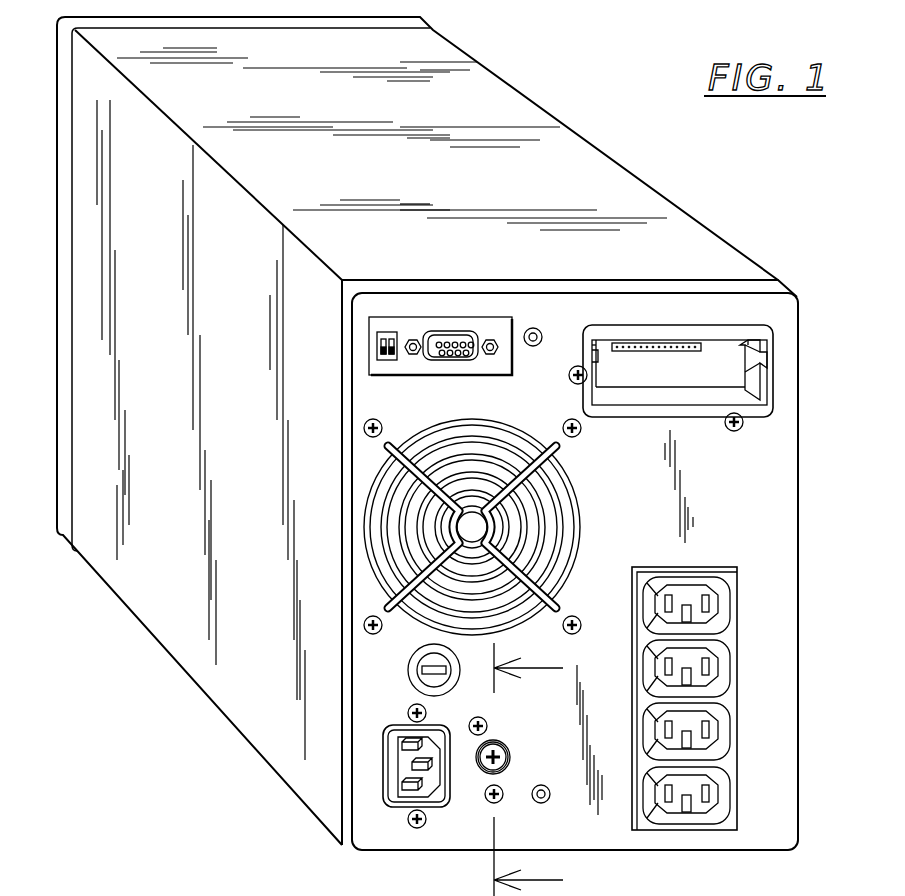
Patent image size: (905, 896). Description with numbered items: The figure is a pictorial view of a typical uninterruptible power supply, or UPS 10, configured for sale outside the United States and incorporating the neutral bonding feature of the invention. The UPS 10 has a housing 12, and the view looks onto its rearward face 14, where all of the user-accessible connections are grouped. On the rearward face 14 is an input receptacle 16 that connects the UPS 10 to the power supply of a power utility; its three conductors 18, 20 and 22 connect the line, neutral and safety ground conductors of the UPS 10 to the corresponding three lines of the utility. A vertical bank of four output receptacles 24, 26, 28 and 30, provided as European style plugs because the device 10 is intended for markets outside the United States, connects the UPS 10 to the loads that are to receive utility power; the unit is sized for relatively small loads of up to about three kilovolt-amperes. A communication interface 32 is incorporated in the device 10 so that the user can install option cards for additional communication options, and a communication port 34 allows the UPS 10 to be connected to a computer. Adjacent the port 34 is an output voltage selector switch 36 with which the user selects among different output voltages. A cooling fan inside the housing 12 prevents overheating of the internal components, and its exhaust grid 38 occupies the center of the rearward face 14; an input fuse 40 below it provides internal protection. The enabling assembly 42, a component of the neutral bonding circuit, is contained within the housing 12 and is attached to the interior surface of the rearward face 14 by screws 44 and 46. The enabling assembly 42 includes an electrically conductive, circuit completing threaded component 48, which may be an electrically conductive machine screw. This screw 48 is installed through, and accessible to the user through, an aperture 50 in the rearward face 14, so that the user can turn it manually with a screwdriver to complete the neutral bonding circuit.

The UPS device 10 is at (576, 71).
The housing 12 is at (155, 628).
The rearward face 14 is at (163, 895).
The input receptacle 16 is at (404, 804).
The conductor 18 is at (402, 746).
The conductor 20 is at (414, 766).
The conductor 22 is at (404, 794).
The output receptacle 24 is at (720, 793).
The output receptacle 26 is at (720, 727).
The output receptacle 28 is at (720, 665).
The output receptacle 30 is at (720, 599).
The communication interface 32 is at (753, 374).
The communication port 34 is at (486, 328).
The output voltage selector switch 36 is at (385, 331).
The exhaust grid 38 is at (388, 474).
The input fuse 40 is at (408, 668).
The enabling assembly 42 is at (518, 739).
The screw 44 is at (487, 722).
The screw 46 is at (500, 802).
The circuit completing threaded component 48 is at (510, 757).
The aperture 50 is at (481, 767).